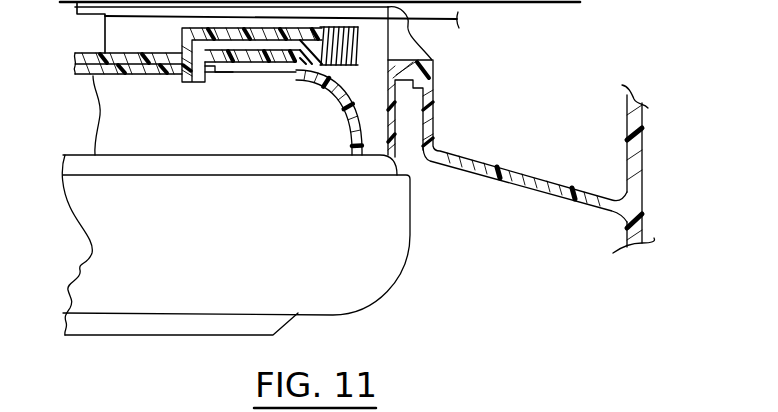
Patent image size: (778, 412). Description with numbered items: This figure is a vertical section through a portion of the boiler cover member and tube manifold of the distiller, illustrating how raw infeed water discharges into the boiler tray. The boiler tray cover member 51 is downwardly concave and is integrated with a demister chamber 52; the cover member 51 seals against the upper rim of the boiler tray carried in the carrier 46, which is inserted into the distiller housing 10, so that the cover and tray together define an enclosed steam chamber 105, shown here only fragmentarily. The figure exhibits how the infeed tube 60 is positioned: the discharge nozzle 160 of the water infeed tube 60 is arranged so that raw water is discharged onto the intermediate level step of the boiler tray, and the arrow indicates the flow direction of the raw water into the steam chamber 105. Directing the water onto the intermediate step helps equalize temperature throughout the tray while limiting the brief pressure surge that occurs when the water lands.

The distiller housing 10 is at (503, 5).
The carrier 46 is at (413, 230).
The boiler tray cover member 51 is at (343, 125).
The demister chamber 52 is at (643, 160).
The infeed tube 60 is at (340, 47).
The steam chamber 105 is at (272, 119).
The discharge nozzle 160 is at (182, 83).